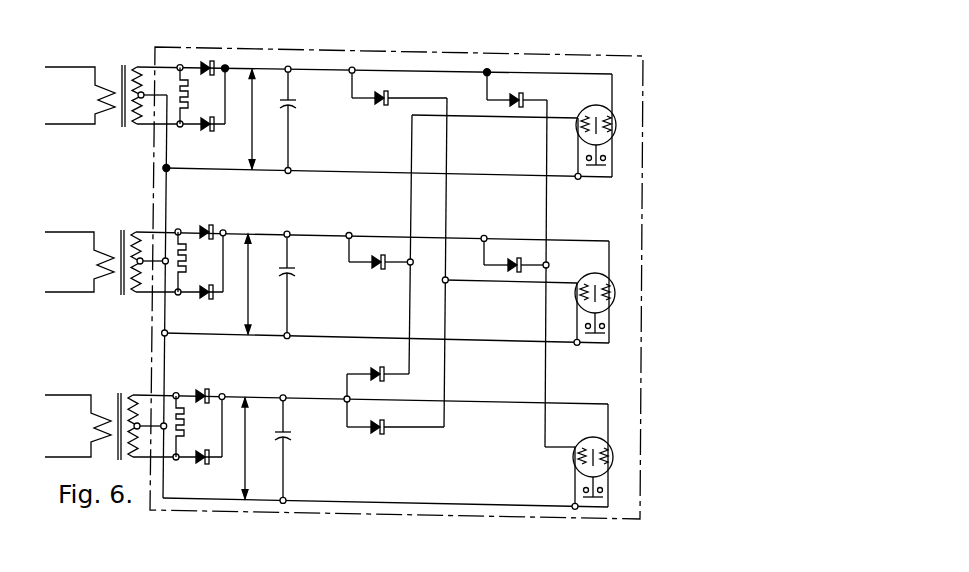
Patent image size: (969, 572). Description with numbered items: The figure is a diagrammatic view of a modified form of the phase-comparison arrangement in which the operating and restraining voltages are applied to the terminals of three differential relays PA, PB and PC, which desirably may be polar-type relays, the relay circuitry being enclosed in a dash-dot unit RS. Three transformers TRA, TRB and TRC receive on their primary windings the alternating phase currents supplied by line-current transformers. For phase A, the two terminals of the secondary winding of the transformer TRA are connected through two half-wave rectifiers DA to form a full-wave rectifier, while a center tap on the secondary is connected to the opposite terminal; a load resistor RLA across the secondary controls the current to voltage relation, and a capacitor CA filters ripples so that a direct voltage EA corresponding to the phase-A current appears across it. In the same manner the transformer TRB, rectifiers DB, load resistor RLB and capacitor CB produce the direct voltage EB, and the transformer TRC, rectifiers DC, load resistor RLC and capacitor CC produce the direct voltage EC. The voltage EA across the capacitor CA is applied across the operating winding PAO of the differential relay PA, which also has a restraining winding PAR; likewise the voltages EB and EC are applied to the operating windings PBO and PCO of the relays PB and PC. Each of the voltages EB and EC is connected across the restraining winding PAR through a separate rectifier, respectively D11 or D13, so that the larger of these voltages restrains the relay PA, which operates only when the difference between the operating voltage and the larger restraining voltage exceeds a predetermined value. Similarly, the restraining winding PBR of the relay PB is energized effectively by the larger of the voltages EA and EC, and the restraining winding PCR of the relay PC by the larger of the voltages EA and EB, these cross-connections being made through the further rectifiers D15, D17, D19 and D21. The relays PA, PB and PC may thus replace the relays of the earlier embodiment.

The relay switching unit RS is at (539, 57).
The transformer TRA is at (94, 82).
The half-wave rectifiers DA is at (213, 61).
The load resistor RLA is at (197, 96).
The direct voltage EA is at (251, 119).
The capacitor CA is at (298, 119).
The rectifier D15 is at (395, 91).
The rectifier D19 is at (527, 93).
The differential relay PA is at (605, 129).
The restraining winding PAR is at (584, 118).
The operating winding PAO is at (608, 127).
The transformer TRB is at (94, 249).
The half-wave rectifiers DB is at (200, 263).
The load resistor RLB is at (195, 262).
The direct voltage EB is at (245, 284).
The capacitor CB is at (299, 285).
The rectifier D11 is at (375, 273).
The rectifier D21 is at (525, 256).
The differential relay PB is at (581, 303).
The restraining winding PBR is at (584, 284).
The operating winding PBO is at (606, 275).
The transformer TRC is at (92, 414).
The half-wave rectifiers DC is at (200, 430).
The load resistor RLC is at (193, 426).
The direct voltage EC is at (242, 448).
The capacitor CC is at (297, 449).
The rectifier D13 is at (385, 364).
The rectifier D17 is at (392, 437).
The differential relay PC is at (603, 463).
The restraining winding PCR is at (577, 470).
The operating winding PCO is at (603, 440).